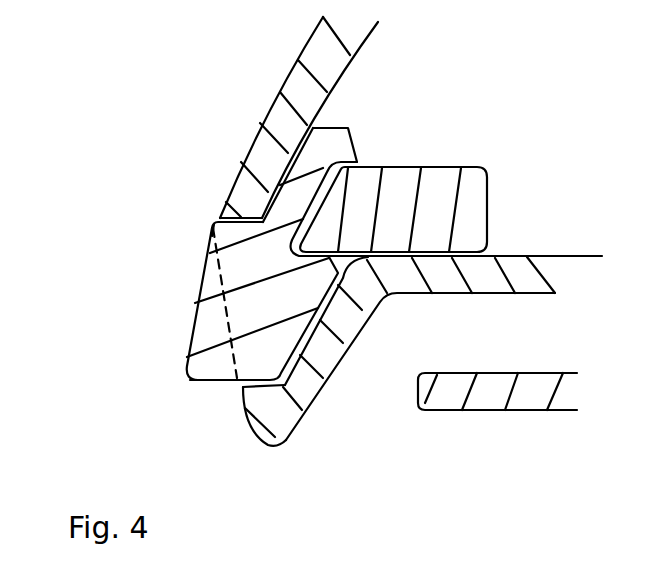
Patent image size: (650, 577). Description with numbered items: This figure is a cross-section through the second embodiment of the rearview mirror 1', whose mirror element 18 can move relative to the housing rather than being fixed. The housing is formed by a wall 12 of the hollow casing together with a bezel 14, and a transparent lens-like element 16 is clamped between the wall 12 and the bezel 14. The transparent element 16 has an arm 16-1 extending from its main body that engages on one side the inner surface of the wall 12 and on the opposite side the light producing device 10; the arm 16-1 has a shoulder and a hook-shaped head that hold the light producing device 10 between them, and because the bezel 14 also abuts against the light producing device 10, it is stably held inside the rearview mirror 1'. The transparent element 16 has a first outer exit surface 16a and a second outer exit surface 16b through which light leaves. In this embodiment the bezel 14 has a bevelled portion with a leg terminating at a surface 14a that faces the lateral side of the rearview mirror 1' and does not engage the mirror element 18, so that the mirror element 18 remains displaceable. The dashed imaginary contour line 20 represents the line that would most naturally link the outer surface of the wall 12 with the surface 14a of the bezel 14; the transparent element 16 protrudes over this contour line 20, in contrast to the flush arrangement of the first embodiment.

The rearview mirror 1' is at (80, 177).
The light producing device 10 is at (475, 192).
The wall 12 is at (277, 128).
The bezel 14 is at (343, 332).
The surface 14a is at (248, 414).
The transparent element 16 is at (212, 322).
The arm 16-1 is at (317, 164).
The first outer surface 16a is at (211, 234).
The second outer surface 16b is at (194, 382).
The mirror element 18 is at (489, 387).
The imaginary contour line 20 is at (232, 364).